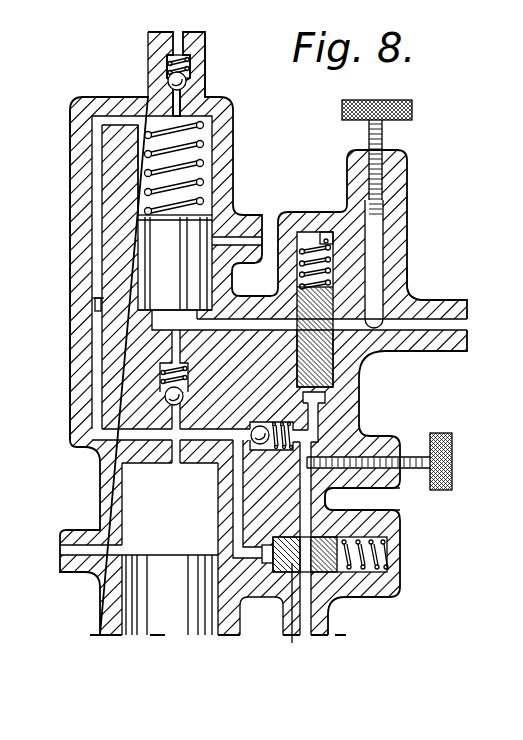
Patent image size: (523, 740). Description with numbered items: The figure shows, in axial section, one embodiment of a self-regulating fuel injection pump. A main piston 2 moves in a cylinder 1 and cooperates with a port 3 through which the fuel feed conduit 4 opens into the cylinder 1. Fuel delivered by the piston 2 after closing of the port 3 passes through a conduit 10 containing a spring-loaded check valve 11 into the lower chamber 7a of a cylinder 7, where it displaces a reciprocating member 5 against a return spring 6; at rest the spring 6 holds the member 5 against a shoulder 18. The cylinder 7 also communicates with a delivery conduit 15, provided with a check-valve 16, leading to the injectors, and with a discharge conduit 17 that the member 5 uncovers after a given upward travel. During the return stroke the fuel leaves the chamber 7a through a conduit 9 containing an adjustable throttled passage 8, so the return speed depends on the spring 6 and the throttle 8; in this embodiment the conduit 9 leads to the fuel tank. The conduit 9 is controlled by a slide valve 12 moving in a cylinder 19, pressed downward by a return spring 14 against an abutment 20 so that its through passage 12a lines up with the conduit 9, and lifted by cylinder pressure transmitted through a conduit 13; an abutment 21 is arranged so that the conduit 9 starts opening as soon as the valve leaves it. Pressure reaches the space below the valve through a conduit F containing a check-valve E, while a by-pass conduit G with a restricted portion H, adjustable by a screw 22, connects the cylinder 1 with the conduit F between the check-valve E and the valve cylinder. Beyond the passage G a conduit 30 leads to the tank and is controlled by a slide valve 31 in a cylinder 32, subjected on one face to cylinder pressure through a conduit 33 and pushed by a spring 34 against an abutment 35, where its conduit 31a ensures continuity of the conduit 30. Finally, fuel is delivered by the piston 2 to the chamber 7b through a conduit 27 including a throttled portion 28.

The cylinder 1 is at (218, 507).
The main piston 2 is at (168, 606).
The port 3 is at (123, 554).
The fuel feed conduit 4 is at (80, 554).
The reciprocating member 5 is at (168, 260).
The return spring 6 is at (148, 150).
The cylinder 7 is at (143, 176).
The lower chamber 7a is at (156, 324).
The chamber 7b is at (160, 135).
The throttled passage 8 is at (409, 294).
The conduit 9 is at (268, 322).
The conduit 10 is at (171, 457).
The check valve 11 is at (168, 393).
The slide valve 12 is at (333, 292).
The passage 12a is at (312, 324).
The conduit 13 is at (318, 399).
The return spring 14 is at (326, 239).
The delivery conduit 15 is at (190, 97).
The check-valve 16 is at (170, 77).
The discharge conduit 17 is at (234, 243).
The shoulder 18 is at (142, 303).
The cylinder 19 is at (335, 248).
The abutment 20 is at (330, 381).
The abutment 21 is at (313, 250).
The screw 22 is at (452, 461).
The conduit 27 is at (97, 228).
The throttled portion 28 is at (95, 304).
The conduit 30 is at (305, 600).
The slide valve 31 is at (292, 640).
The conduit 31a is at (325, 560).
The cylinder 32 is at (392, 567).
The conduit 33 is at (238, 553).
The spring 34 is at (378, 545).
The abutment 35 is at (276, 572).
The check-valve E is at (170, 549).
The conduit F is at (298, 436).
The by-pass conduit G is at (362, 499).
The restricted portion H is at (309, 460).